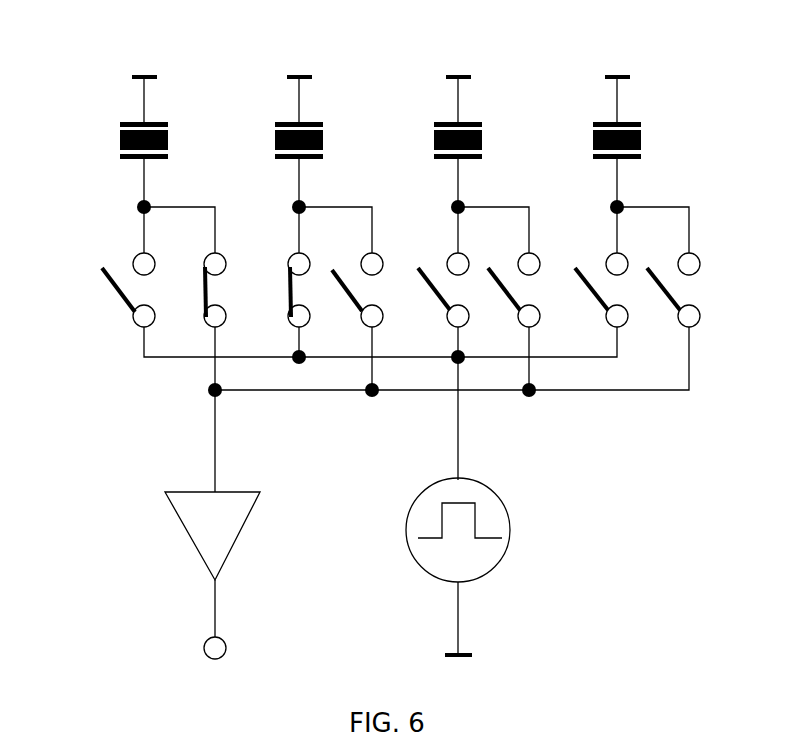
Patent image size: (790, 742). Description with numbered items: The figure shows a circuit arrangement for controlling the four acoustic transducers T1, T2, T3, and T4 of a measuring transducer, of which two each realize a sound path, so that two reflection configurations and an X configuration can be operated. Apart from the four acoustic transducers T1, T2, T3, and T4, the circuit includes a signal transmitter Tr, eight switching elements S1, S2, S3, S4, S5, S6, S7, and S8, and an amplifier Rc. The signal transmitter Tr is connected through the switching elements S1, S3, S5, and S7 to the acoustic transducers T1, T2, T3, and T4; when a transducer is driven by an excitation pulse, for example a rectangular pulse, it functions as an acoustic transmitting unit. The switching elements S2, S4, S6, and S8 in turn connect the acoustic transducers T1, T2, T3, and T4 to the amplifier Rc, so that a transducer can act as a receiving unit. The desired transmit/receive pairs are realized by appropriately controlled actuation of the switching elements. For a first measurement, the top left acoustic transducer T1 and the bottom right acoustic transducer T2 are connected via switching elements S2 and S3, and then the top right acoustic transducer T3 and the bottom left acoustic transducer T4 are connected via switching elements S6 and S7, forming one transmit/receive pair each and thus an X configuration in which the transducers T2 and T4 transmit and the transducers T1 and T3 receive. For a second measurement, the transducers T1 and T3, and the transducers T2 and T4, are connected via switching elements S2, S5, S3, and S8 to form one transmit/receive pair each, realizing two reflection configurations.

The acoustic transducer T1 is at (113, 141).
The acoustic transducer T2 is at (270, 141).
The acoustic transducer T3 is at (431, 141).
The acoustic transducer T4 is at (594, 141).
The switching element S1 is at (117, 296).
The switching element S2 is at (193, 290).
The switching element S3 is at (278, 290).
The switching element S4 is at (350, 293).
The switching element S5 is at (438, 299).
The switching element S6 is at (511, 299).
The switching element S7 is at (596, 299).
The switching element S8 is at (671, 299).
The amplifier Rc is at (191, 524).
The signal transmitter Tr is at (424, 567).